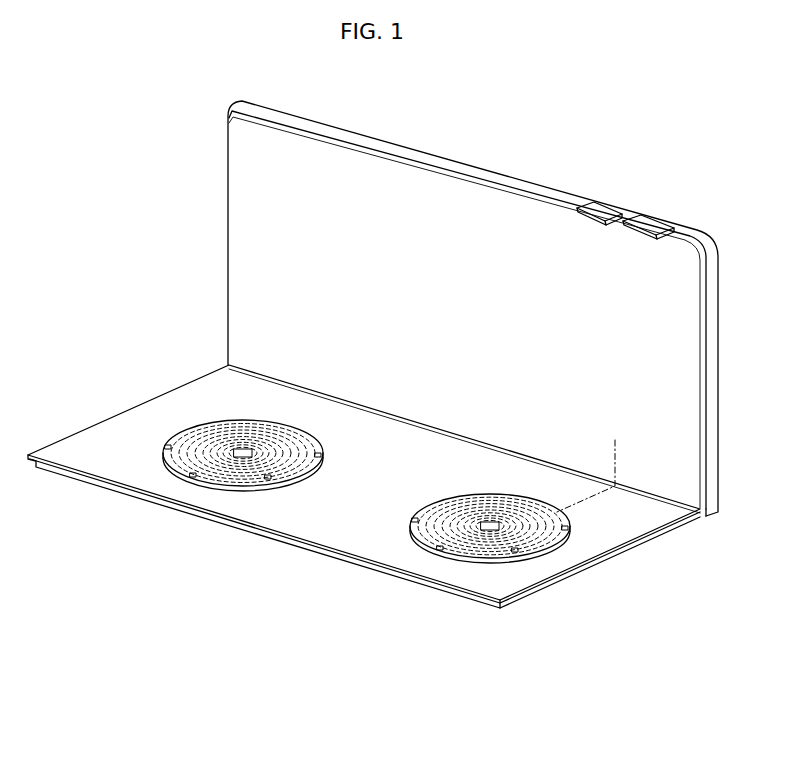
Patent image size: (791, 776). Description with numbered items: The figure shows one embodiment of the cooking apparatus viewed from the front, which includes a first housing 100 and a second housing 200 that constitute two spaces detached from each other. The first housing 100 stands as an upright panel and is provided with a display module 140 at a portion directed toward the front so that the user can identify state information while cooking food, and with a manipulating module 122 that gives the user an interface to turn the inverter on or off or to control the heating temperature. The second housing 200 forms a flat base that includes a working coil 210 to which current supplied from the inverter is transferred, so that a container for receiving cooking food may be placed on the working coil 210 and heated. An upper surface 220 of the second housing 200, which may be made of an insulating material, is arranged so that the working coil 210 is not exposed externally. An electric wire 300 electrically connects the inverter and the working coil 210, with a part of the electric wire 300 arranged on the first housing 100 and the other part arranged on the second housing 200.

The first housing 100 is at (473, 299).
The manipulating module 122 is at (655, 232).
The display module 140 is at (605, 207).
The second housing 200 is at (364, 509).
The working coil 210 is at (447, 552).
The upper surface 220 is at (258, 507).
The electric wire 300 is at (583, 503).